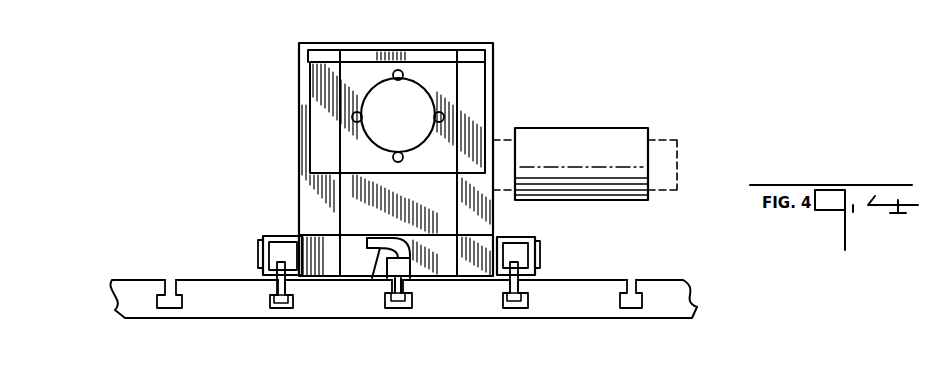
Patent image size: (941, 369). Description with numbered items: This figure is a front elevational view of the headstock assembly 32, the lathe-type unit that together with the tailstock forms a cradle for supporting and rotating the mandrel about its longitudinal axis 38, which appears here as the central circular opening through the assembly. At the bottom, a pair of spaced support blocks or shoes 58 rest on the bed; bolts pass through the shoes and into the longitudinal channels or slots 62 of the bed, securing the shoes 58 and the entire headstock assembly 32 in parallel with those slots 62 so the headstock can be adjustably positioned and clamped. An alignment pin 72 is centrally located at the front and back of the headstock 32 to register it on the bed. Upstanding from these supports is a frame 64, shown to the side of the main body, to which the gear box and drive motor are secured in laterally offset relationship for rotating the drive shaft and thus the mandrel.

The headstock assembly 32 is at (298, 111).
The longitudinal axis 38 is at (418, 102).
The frame 64 is at (495, 125).
The support blocks or shoes 58 is at (273, 253).
The channels or slots 62 is at (518, 290).
The alignment pin 72 is at (375, 252).